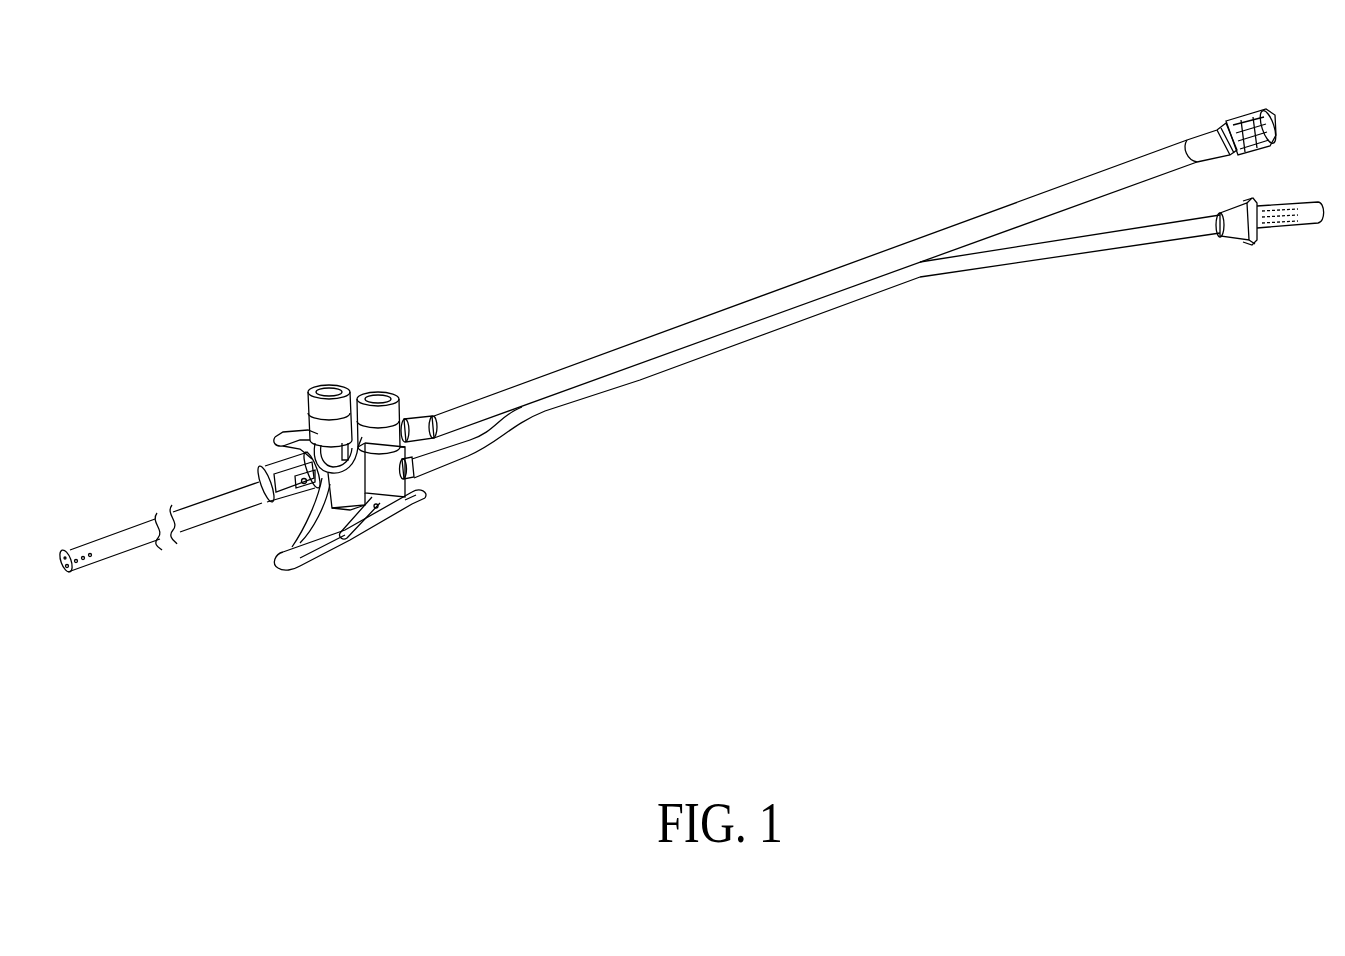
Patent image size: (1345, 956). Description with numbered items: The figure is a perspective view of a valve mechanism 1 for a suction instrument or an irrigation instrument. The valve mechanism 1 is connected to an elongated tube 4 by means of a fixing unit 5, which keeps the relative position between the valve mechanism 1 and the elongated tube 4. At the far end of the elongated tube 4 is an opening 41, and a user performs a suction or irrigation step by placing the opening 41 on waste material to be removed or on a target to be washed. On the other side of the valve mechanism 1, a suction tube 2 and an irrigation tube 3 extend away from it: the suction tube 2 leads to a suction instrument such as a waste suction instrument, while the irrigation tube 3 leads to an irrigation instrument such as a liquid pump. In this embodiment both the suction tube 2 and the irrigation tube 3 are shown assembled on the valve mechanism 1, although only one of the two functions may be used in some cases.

The valve mechanism 1 is at (377, 358).
The suction tube 2 is at (1252, 112).
The irrigation tube 3 is at (1306, 216).
The elongated tube 4 is at (85, 551).
The opening 41 is at (69, 574).
The fixing unit 5 is at (265, 465).